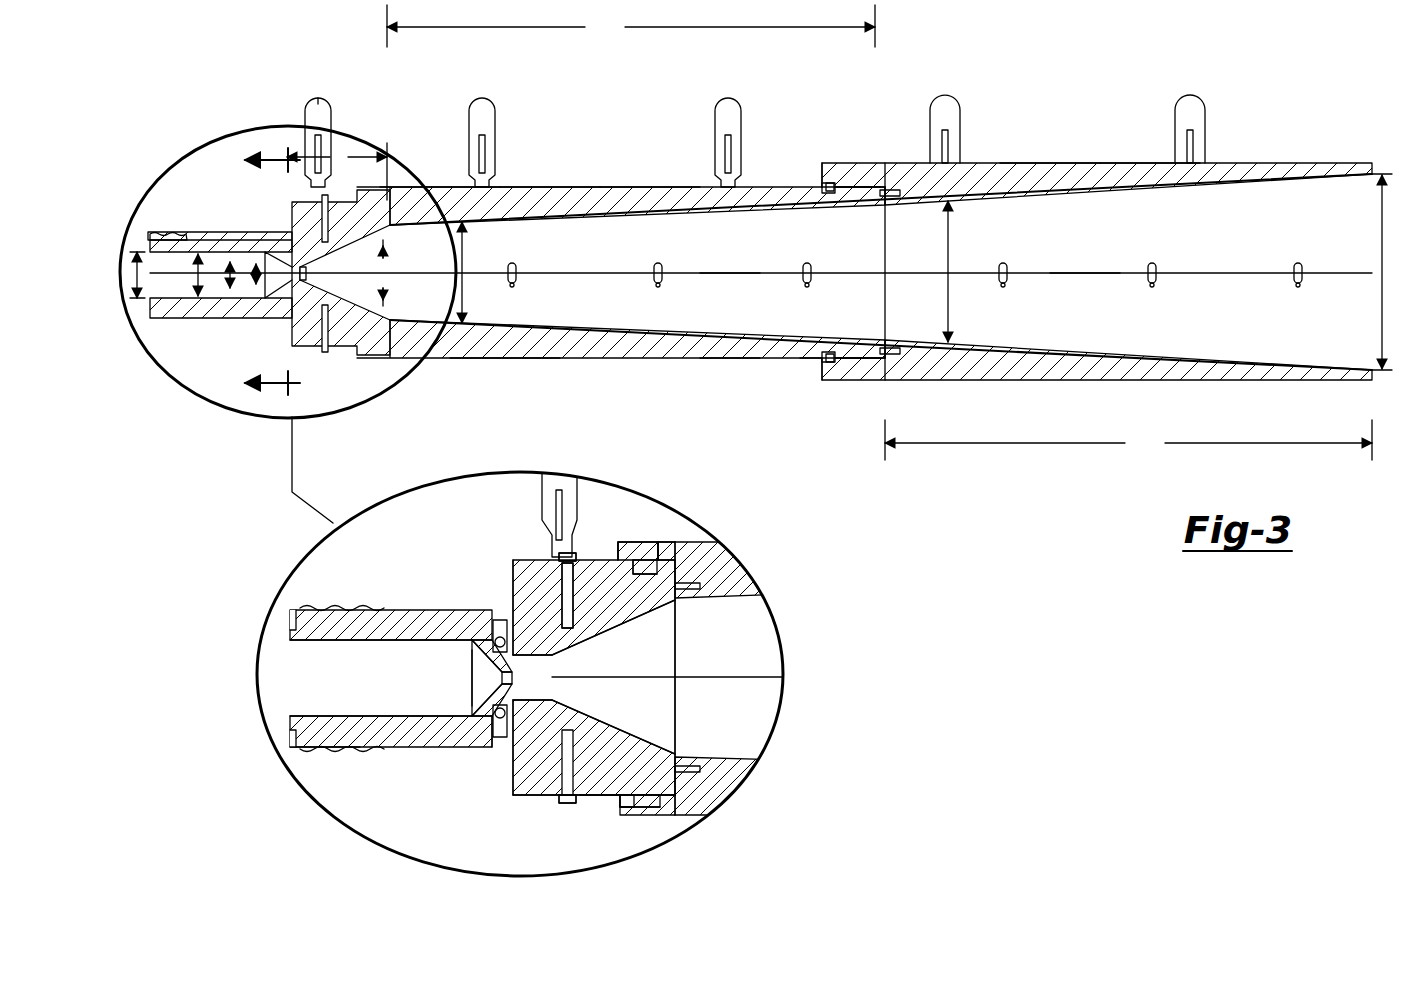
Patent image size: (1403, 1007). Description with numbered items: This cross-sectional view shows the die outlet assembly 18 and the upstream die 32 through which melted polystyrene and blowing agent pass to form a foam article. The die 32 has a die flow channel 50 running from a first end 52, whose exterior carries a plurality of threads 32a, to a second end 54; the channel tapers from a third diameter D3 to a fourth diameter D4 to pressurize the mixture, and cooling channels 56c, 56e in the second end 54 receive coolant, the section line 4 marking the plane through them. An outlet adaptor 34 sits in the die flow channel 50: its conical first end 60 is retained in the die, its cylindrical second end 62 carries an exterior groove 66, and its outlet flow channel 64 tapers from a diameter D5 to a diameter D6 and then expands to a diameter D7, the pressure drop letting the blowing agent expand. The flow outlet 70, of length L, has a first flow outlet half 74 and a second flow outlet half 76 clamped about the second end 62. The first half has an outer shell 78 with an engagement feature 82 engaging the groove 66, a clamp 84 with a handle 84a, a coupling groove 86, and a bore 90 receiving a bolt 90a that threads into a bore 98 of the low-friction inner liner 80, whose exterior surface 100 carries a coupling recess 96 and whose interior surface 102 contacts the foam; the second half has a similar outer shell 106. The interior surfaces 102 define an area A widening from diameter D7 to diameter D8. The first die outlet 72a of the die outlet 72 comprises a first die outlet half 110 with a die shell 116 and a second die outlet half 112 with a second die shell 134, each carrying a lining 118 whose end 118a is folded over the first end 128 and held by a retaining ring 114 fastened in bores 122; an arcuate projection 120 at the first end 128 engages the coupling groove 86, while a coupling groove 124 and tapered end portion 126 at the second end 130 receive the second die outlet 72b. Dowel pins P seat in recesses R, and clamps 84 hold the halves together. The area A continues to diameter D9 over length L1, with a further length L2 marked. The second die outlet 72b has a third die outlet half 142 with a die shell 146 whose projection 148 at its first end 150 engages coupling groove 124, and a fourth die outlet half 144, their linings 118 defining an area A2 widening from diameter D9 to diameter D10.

The section line 4- 4 is at (272, 271).
The die outlet assembly 18 is at (630, 78).
The die 32 is at (393, 606).
The plurality of threads 32a is at (345, 748).
The outlet adaptor 34 is at (488, 635).
The die flow channel 50 is at (330, 716).
The first end of die 52 is at (285, 760).
The second end of die 54 is at (490, 780).
The cooling channel 56c is at (497, 725).
The cooling channel 56e is at (497, 632).
The first end of outlet adaptor 60 is at (470, 690).
The second end of outlet adaptor 62 is at (565, 668).
The outlet flow channel 64 is at (550, 686).
The exterior groove 66 is at (509, 740).
The flow outlet 70 is at (580, 808).
The die outlet 72 is at (735, 422).
The first die outlet 72a is at (680, 120).
The second die outlet 72b is at (1070, 95).
The first flow outlet half 74 is at (573, 540).
The second flow outlet half 76 is at (595, 812).
The outer shell 78 is at (660, 545).
The inner liner 80 is at (680, 640).
The engagement feature 82 is at (518, 630).
The clamp 84 is at (331, 106).
The handle 84a is at (318, 105).
The coupling groove 86 is at (670, 545).
The bore 90 is at (555, 567).
The bolt 90a is at (535, 560).
The coupling recess 96 is at (607, 560).
The bore of inner liner 98 is at (574, 620).
The exterior surface of inner liner 100 is at (690, 545).
The interior surface of inner liner 102 is at (656, 615).
The outer shell of second flow outlet half 106 is at (635, 830).
The first die outlet half 110 is at (578, 147).
The second die outlet half 112 is at (505, 385).
The retaining ring 114 is at (886, 362).
The die shell 116 is at (603, 185).
The lining 118 is at (580, 222).
The end of lining 118a is at (888, 208).
The projection 120 is at (640, 540).
The bores 122 is at (890, 190).
The coupling groove 124 is at (826, 184).
The tapered end portion 126 is at (870, 190).
The first end of die shell 128 is at (418, 405).
The second end of die shell 130 is at (808, 362).
The second die shell 134 is at (640, 365).
The third die outlet half 142 is at (1125, 118).
The fourth die outlet half 144 is at (1140, 383).
The die shell of third die outlet half 146 is at (1058, 148).
The projection 148 is at (830, 184).
The first end of die shell 150 is at (855, 85).
The dowel pins P is at (518, 266).
The recesses R is at (516, 283).
The area A is at (730, 252).
The area A2 is at (1085, 256).
The length of flow outlet L is at (337, 171).
The length of lining contact L1 is at (1128, 440).
The length L2 is at (631, 26).
The third diameter D3 is at (150, 250).
The fourth diameter D4 is at (198, 252).
The diameter D5 is at (230, 292).
The diameter D6 is at (255, 287).
The diameter D7 is at (392, 272).
The diameter D8 is at (470, 272).
The diameter D9 is at (952, 271).
The diameter D10 is at (1385, 272).